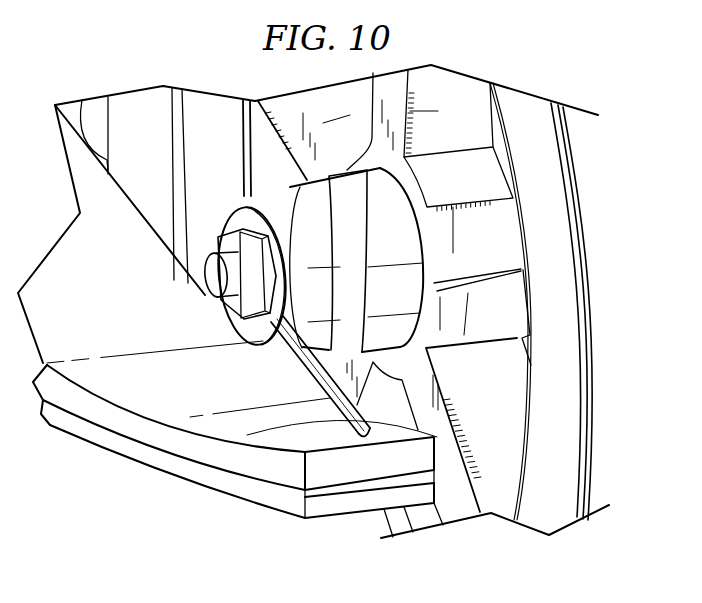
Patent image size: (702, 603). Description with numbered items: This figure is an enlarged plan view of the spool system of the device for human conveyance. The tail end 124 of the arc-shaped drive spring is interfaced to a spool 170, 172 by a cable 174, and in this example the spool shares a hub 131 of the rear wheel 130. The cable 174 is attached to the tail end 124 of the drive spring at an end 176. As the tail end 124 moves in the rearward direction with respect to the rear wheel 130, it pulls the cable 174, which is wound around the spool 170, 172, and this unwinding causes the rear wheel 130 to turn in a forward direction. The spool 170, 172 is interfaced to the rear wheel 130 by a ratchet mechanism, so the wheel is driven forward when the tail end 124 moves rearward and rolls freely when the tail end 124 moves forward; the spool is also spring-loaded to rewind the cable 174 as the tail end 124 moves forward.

The tail end of the arc-shaped drive spring 124 is at (207, 452).
The rear wheel 130 is at (491, 230).
The hub 131 is at (208, 277).
The spool 170 is at (252, 200).
The spool 172 is at (240, 218).
The cable 174 is at (312, 396).
The end 176 is at (376, 447).